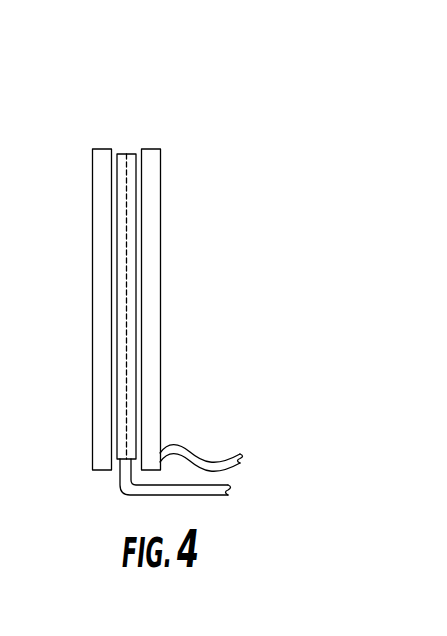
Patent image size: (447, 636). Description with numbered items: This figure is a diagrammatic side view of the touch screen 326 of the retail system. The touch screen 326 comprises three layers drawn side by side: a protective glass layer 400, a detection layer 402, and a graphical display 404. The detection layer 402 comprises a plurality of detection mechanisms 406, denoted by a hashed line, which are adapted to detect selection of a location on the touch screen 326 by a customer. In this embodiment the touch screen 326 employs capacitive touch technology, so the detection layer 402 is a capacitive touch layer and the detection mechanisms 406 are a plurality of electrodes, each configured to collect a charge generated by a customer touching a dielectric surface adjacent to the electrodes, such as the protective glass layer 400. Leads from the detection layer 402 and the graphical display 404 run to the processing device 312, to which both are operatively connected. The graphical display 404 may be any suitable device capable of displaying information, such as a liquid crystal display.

The touch screen 326 is at (228, 167).
The protective glass layer 400 is at (103, 149).
The detection layer 402 is at (127, 154).
The graphical display 404 is at (148, 149).
The detection mechanisms 406 is at (127, 323).
The processing device 312 is at (250, 512).